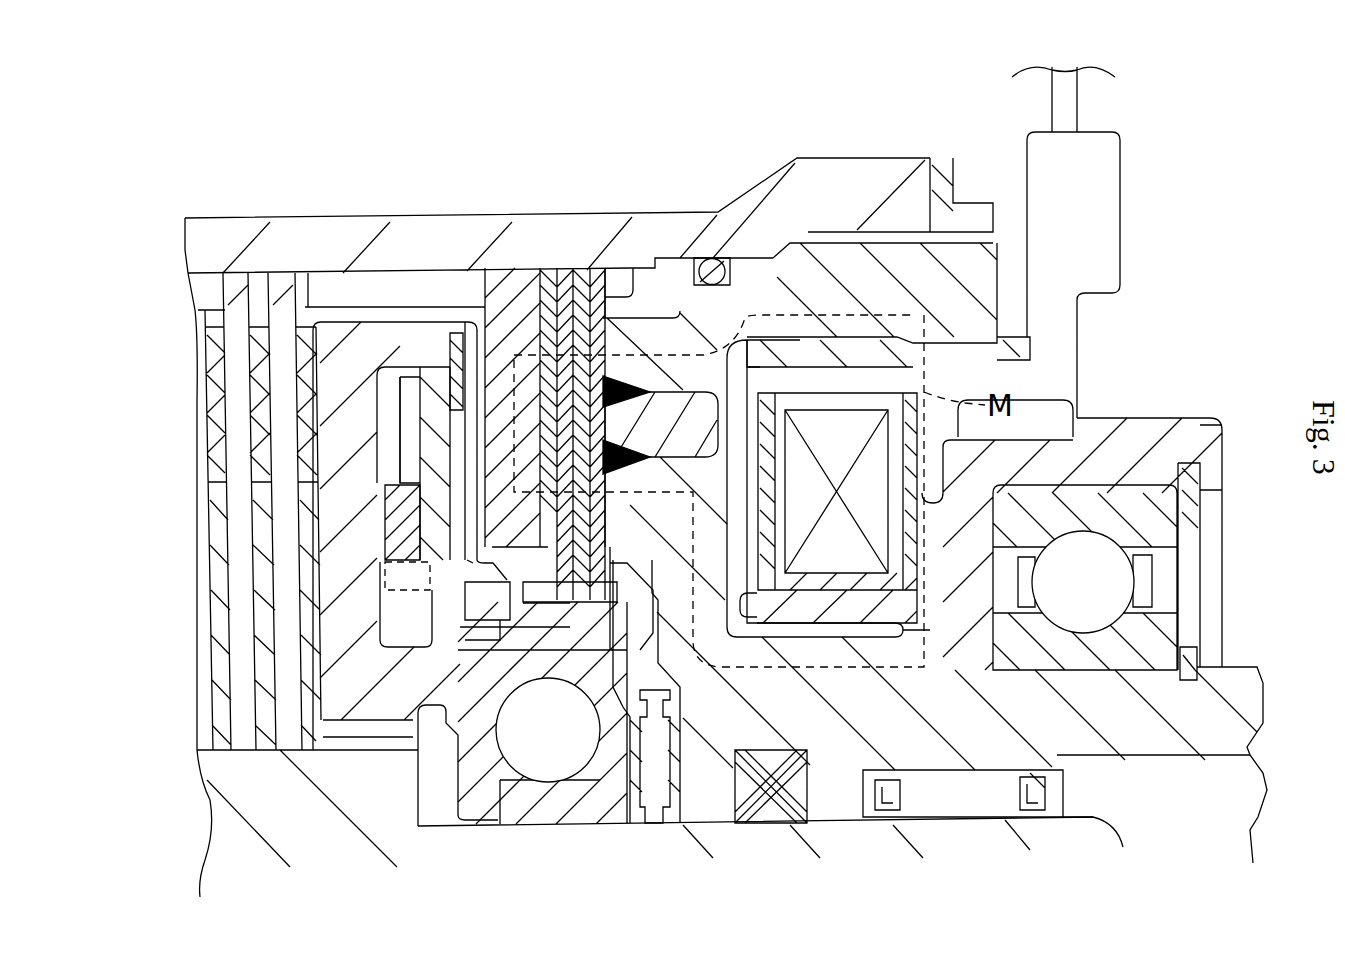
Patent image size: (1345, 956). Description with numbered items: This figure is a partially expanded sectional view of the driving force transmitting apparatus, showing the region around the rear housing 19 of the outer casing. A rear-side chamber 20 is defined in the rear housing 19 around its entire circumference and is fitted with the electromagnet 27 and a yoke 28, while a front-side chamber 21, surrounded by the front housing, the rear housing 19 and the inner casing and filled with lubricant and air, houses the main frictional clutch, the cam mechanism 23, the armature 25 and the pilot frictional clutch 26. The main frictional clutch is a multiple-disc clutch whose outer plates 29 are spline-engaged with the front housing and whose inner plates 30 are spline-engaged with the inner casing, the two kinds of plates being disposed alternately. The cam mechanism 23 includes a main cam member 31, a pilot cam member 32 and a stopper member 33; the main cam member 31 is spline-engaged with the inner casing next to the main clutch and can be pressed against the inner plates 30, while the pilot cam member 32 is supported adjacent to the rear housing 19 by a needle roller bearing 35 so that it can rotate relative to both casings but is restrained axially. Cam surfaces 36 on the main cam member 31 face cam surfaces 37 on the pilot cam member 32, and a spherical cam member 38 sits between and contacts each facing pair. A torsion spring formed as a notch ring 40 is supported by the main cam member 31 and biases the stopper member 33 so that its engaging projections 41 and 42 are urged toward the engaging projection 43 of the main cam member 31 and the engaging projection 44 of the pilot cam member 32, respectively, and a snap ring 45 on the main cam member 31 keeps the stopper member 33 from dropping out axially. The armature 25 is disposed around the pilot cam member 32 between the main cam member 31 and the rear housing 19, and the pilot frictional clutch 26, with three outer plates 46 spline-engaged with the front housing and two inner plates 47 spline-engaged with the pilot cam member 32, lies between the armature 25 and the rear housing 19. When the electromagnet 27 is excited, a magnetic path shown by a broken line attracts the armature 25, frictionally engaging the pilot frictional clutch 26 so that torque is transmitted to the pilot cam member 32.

The rear housing 19 is at (1000, 268).
The rear-side chamber 20 is at (750, 347).
The front-side chamber 21 is at (305, 317).
The cam mechanism 23 is at (727, 757).
The armature 25 is at (512, 283).
The pilot frictional clutch 26 is at (567, 270).
The electromagnet 27 is at (835, 447).
The yoke 28 is at (1098, 422).
The outer plates 29 is at (236, 283).
The inner plates 30 is at (269, 750).
The main cam member 31 is at (500, 810).
The pilot cam member 32 is at (607, 813).
The stopper member 33 is at (420, 413).
The needle roller bearing 35 is at (665, 762).
The cam surfaces 36 is at (505, 688).
The cam surfaces 37 is at (622, 670).
The spherical cam member 38 is at (548, 781).
The notch ring 40 is at (395, 505).
The engaging projection 41 is at (388, 578).
The engaging projection 42 is at (497, 570).
The engaging projection 43 is at (400, 620).
The engaging projection 44 is at (534, 682).
The snap ring 45 is at (450, 347).
The outer plates 46 is at (619, 275).
The inner plates 47 is at (615, 560).